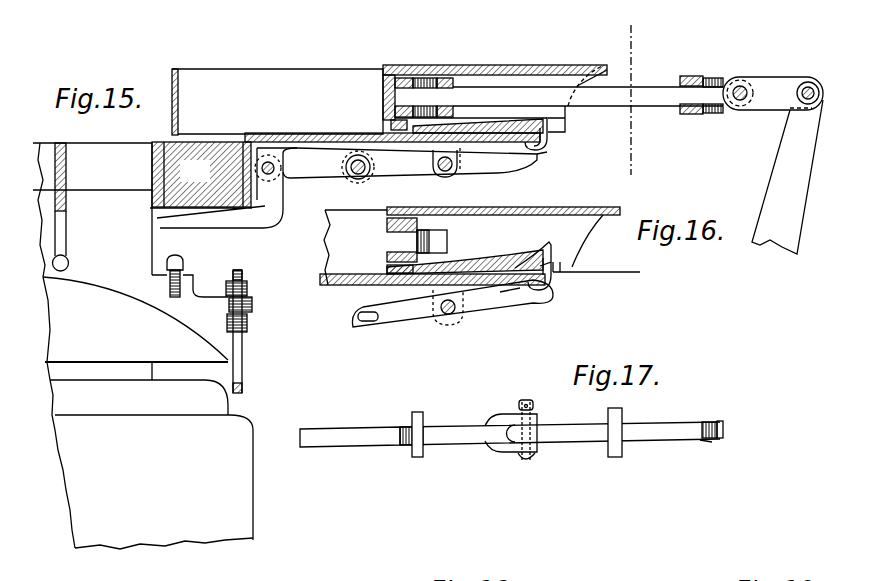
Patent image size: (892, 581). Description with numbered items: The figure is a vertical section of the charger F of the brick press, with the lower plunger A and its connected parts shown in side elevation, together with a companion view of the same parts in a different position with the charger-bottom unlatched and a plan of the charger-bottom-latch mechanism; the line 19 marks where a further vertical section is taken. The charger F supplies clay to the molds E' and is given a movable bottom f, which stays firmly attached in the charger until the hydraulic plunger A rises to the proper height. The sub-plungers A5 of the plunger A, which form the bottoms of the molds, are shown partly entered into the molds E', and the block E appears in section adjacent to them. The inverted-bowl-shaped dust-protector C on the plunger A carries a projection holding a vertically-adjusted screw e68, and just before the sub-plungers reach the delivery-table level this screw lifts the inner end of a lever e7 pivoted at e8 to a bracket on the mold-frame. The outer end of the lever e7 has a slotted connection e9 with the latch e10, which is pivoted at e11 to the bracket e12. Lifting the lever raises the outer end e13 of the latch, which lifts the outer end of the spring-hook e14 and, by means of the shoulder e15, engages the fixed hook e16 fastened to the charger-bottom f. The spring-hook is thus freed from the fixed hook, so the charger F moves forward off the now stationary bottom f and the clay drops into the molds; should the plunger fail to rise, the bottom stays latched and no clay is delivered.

In FIG. 15, the charger F is at (389, 88).
In FIG. 16, the charger F is at (498, 210).
In FIG. 15, the charger-bottom f is at (246, 128).
In FIG. 16, the charger-bottom f is at (348, 277).
In FIG. 15, the block E is at (201, 174).
In FIG. 15, the molds E' is at (92, 209).
In FIG. 15, the lower plunger A is at (50, 384).
In FIG. 15, the sub-plungers A5 is at (140, 196).
In FIG. 15, the dust-protector C is at (135, 319).
In FIG. 15, the section line 19 is at (627, 97).
In FIG. 15, the lever e7 is at (264, 218).
In FIG. 15, the pivot e8 is at (280, 168).
In FIG. 17, the pivot e8 is at (423, 453).
In FIG. 15, the slotted connection e9 is at (357, 180).
In FIG. 16, the slotted connection e9 is at (358, 318).
In FIG. 17, the slotted connection e9 is at (535, 455).
In FIG. 15, the latch e10 is at (467, 177).
In FIG. 16, the latch e10 is at (408, 322).
In FIG. 15, the pivot e11 is at (437, 166).
In FIG. 16, the pivot e11 is at (455, 313).
In FIG. 17, the pivot e11 is at (620, 458).
In FIG. 15, the bracket e12 is at (477, 159).
In FIG. 15, the outer end of the latch e13 is at (547, 145).
In FIG. 16, the outer end of the latch e13 is at (553, 280).
In FIG. 17, the outer end of the latch e13 is at (723, 428).
In FIG. 15, the spring-hook e14 is at (565, 124).
In FIG. 16, the spring-hook e14 is at (546, 251).
In FIG. 15, the shoulder e15 is at (525, 154).
In FIG. 16, the shoulder e15 is at (506, 298).
In FIG. 17, the shoulder e15 is at (701, 450).
In FIG. 15, the fixed hook e16 is at (505, 120).
In FIG. 16, the fixed hook e16 is at (553, 265).
In FIG. 15, the screw e68 is at (183, 260).